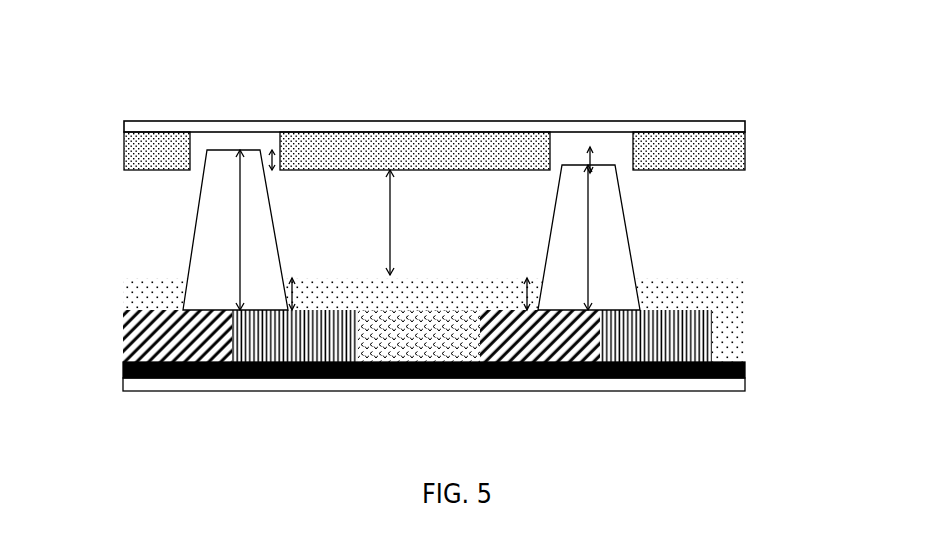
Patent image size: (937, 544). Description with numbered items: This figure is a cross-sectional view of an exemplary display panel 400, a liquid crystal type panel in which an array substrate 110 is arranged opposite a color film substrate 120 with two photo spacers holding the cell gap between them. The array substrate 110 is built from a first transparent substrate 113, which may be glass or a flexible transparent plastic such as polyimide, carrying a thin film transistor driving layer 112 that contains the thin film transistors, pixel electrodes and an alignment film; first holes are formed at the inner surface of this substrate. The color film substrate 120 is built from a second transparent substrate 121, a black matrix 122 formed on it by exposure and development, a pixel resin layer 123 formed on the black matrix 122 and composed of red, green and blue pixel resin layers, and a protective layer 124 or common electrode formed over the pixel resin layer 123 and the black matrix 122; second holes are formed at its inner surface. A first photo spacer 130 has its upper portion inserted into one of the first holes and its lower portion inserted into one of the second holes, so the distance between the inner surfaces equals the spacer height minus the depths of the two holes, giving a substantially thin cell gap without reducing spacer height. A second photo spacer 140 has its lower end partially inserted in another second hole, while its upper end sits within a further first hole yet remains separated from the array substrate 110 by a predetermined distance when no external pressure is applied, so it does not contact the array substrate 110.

The display panel 400 is at (200, 60).
The array substrate 110 is at (495, 142).
The thin film transistor driving layer 112 is at (310, 160).
The first transparent substrate 113 is at (612, 133).
The color film substrate 120 is at (436, 335).
The second transparent substrate 121 is at (723, 382).
The black matrix 122 is at (623, 377).
The pixel resin layer 123 is at (454, 348).
The protective layer 124 is at (505, 298).
The first photo spacer 130 is at (197, 260).
The second photo spacer 140 is at (613, 263).